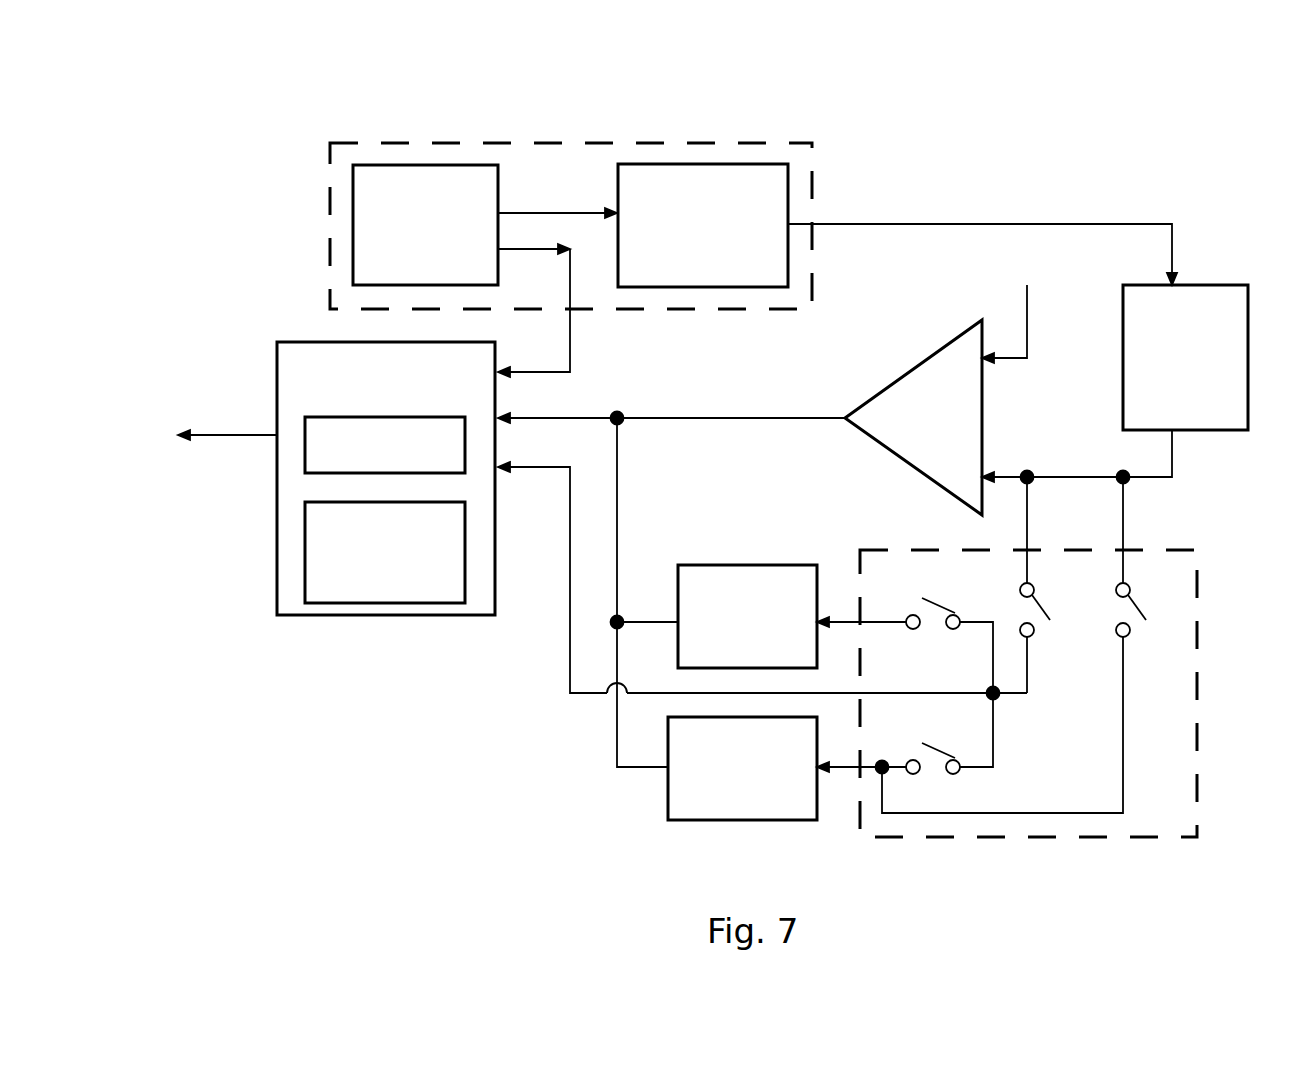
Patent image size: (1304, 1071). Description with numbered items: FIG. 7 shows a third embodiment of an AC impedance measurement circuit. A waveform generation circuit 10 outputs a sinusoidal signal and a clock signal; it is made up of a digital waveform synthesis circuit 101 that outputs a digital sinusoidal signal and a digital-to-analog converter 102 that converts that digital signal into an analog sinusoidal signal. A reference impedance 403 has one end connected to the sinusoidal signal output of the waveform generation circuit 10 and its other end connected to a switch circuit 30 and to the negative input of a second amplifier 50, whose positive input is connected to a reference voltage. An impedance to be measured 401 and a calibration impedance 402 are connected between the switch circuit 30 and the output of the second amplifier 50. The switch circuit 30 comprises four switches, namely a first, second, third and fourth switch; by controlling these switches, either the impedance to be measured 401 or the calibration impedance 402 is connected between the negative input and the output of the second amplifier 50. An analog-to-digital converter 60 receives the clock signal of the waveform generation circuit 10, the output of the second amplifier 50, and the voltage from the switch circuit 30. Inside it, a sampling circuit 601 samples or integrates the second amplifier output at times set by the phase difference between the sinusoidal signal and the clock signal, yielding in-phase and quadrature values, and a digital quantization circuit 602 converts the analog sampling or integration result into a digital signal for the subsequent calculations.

The waveform generation circuit 10 is at (566, 136).
The digital waveform synthesis circuit 101 is at (372, 185).
The digital-to-analog converter 102 is at (688, 183).
The analog-to-digital converter 60 is at (293, 387).
The sampling circuit 601 is at (328, 435).
The digital quantization circuit 602 is at (320, 550).
The second amplifier 50 is at (935, 377).
The switch circuit 30 is at (1175, 548).
The impedance to be measured 401 is at (747, 616).
The calibration impedance 402 is at (742, 768).
The reference impedance 403 is at (1185, 357).